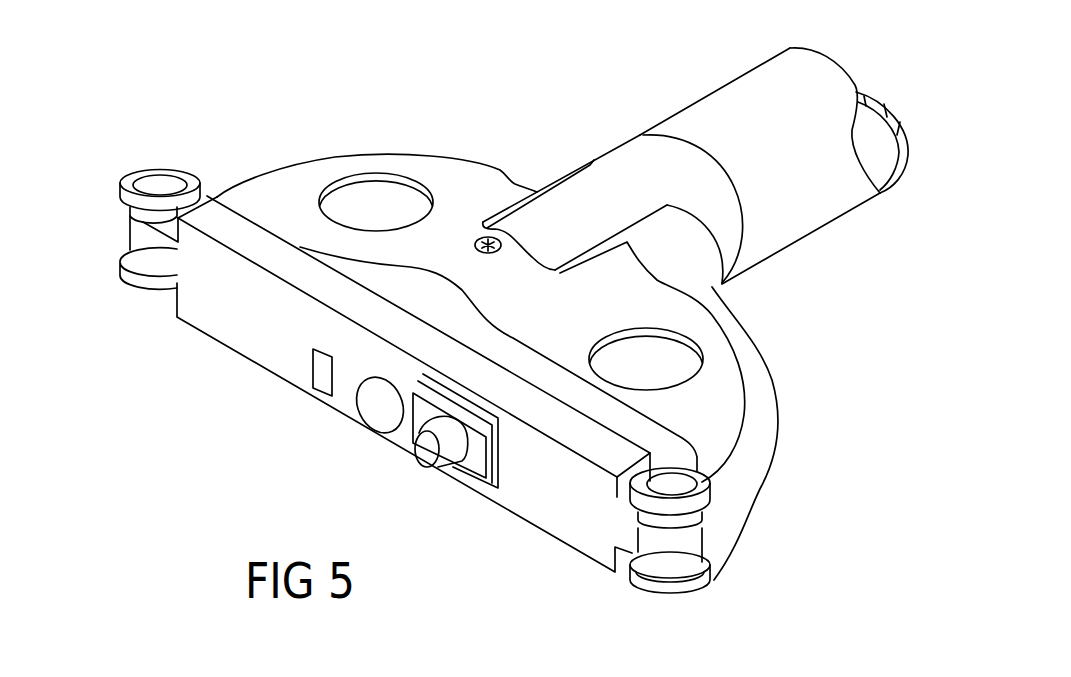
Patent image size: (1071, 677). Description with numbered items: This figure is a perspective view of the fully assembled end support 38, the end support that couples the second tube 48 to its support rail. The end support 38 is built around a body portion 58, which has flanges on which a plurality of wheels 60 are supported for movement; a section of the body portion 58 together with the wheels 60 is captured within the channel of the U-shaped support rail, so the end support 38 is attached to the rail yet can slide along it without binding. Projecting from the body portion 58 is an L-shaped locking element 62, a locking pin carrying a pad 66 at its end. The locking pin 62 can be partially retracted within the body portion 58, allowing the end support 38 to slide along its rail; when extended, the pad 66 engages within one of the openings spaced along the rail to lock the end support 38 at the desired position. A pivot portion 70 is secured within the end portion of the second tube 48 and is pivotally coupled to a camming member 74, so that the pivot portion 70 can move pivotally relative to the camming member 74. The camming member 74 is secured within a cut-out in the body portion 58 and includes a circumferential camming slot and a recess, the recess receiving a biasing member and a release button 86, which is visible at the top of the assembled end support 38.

The end support 38 is at (837, 347).
The second tube 48 is at (792, 210).
The body portion 58 is at (164, 259).
The wheels 60 is at (120, 272).
The L-shaped locking element 62 is at (428, 447).
The pad 66 is at (470, 463).
The pivot portion 70 is at (619, 133).
The camming member 74 is at (724, 284).
The release button 86 is at (485, 242).